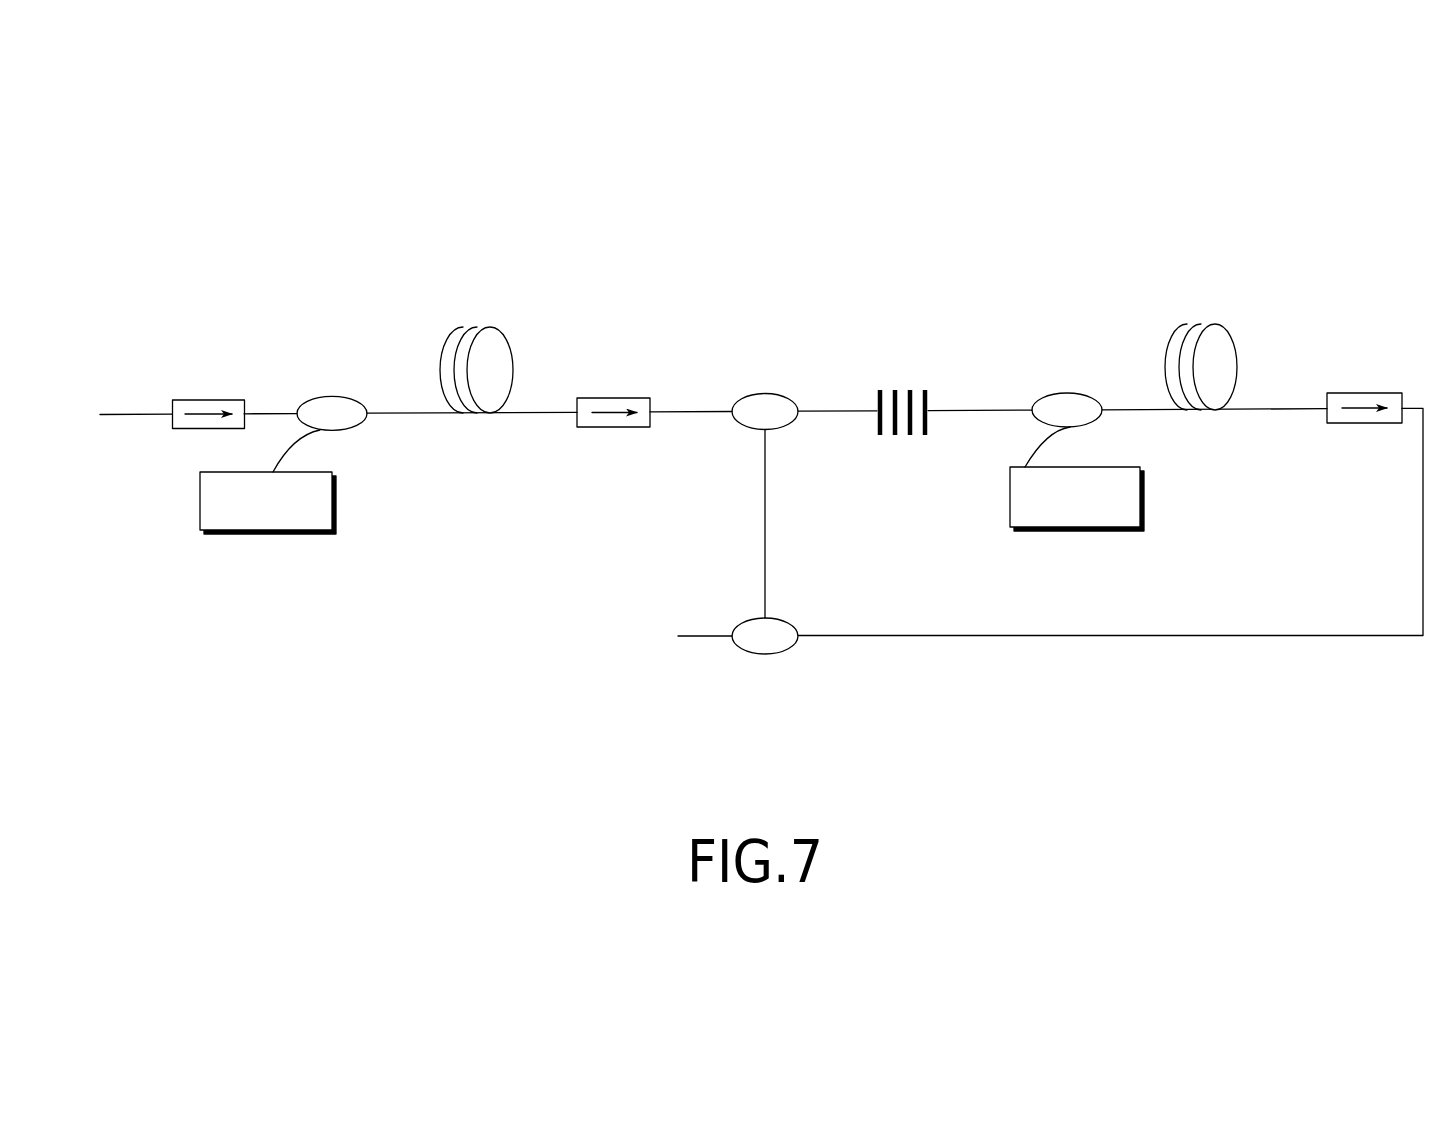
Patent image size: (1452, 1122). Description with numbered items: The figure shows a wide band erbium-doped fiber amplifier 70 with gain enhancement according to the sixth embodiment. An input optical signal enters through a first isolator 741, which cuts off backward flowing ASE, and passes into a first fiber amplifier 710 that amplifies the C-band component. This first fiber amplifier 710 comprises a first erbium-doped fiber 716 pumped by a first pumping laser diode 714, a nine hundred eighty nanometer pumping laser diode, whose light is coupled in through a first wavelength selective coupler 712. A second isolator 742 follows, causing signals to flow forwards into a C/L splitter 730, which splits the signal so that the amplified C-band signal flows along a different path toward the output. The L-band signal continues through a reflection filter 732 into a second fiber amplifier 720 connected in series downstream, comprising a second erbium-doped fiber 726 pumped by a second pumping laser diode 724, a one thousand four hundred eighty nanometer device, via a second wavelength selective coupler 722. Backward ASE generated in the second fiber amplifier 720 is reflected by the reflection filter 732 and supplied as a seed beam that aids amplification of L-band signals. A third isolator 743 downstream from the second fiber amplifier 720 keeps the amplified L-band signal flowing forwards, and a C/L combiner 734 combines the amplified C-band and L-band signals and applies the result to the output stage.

The fiber amplifier 70 is at (795, 178).
The first fiber amplifier 710 is at (437, 328).
The first wavelength selective coupler 712 is at (320, 397).
The first pumping laser diode 714 is at (283, 533).
The first erbium-doped fiber 716 is at (507, 340).
The second fiber amplifier 720 is at (1154, 326).
The second wavelength selective coupler 722 is at (1100, 418).
The second pumping laser diode 724 is at (1143, 512).
The second erbium-doped fiber 726 is at (1230, 340).
The C/L splitter 730 is at (782, 430).
The reflection filter 732 is at (927, 435).
The C/L combiner 734 is at (788, 620).
The first isolator 741 is at (205, 398).
The second isolator 742 is at (610, 428).
The third isolator 743 is at (1360, 393).